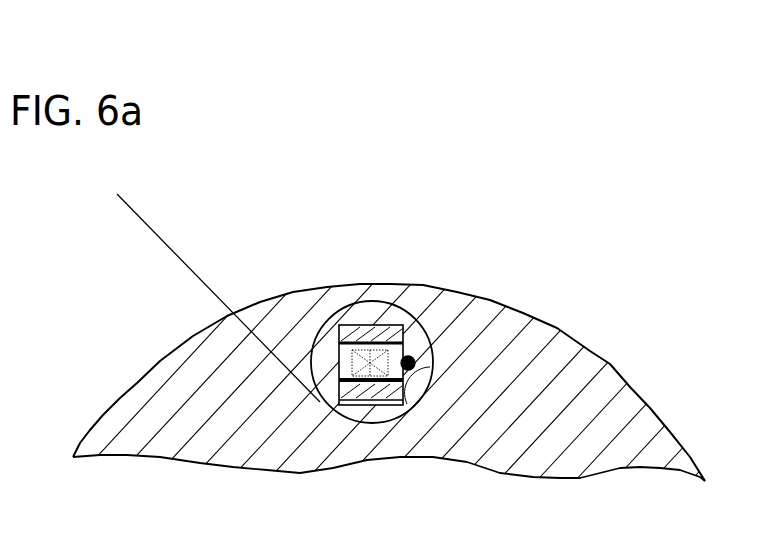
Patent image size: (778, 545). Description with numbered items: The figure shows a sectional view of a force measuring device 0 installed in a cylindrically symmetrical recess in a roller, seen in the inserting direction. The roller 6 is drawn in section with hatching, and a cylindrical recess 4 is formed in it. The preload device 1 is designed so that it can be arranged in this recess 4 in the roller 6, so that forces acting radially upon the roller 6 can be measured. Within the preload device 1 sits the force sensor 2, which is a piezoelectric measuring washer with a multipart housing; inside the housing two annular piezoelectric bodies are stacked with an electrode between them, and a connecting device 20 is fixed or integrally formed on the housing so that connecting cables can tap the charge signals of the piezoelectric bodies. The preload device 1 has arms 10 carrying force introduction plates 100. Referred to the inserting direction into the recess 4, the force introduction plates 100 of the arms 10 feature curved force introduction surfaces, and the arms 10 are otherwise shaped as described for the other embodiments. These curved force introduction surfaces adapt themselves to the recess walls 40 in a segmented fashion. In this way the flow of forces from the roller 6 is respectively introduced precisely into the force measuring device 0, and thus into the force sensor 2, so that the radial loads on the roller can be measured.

The force measuring device 0 is at (321, 338).
The preload device 1 is at (339, 326).
The force sensor 2 is at (377, 343).
The cylindrical recess 4 is at (210, 286).
The roller 6 is at (177, 445).
The arms 10 is at (365, 333).
The connecting device 20 is at (414, 361).
The recess walls 40 is at (395, 404).
The force introduction plates 100 is at (372, 352).